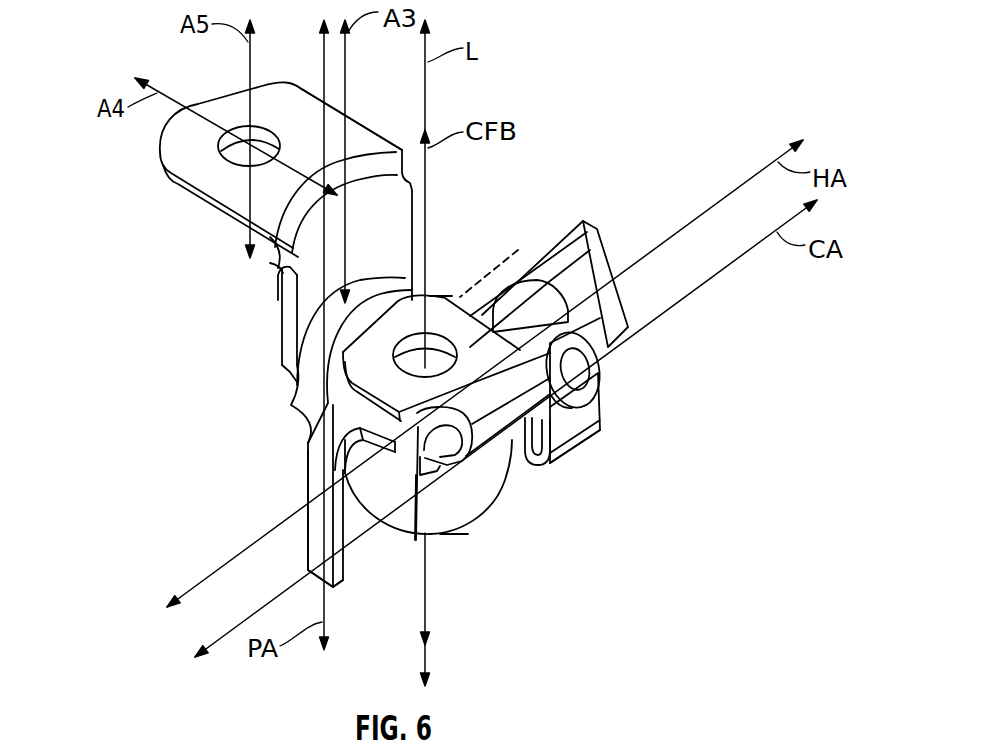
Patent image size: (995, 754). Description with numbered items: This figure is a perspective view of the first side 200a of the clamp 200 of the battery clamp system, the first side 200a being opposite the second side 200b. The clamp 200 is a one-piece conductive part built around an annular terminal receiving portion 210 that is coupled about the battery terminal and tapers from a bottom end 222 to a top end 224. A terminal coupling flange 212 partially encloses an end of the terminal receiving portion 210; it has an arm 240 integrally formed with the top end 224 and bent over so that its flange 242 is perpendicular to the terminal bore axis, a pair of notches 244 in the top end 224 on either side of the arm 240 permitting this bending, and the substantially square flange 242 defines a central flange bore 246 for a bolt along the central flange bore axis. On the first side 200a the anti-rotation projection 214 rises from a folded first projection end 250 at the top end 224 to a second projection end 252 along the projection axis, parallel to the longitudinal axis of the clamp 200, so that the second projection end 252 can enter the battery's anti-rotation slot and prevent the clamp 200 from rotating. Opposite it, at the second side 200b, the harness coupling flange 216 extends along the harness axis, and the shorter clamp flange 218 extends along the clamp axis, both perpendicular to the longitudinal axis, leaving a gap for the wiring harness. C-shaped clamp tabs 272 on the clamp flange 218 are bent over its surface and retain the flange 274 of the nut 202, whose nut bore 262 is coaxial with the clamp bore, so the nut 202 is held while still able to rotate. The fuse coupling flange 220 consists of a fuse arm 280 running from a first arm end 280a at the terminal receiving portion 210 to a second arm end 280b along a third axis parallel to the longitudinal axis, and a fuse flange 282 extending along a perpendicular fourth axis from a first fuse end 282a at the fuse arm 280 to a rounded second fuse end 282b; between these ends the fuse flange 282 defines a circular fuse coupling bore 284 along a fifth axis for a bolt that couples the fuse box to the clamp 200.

The clamp 200 is at (550, 150).
The first side 200a is at (413, 460).
The second side 200b is at (523, 249).
The nut 202 is at (612, 387).
The terminal receiving portion 210 is at (460, 550).
The terminal coupling flange 212 is at (405, 288).
The anti-rotation projection 214 is at (295, 563).
The harness coupling flange 216 is at (620, 281).
The clamp flange 218 is at (582, 452).
The fuse coupling flange 220 is at (278, 83).
The bottom end 222 is at (490, 513).
The top end 224 is at (431, 463).
The arm 240 is at (512, 443).
The flange 242 is at (452, 290).
The notches 244 is at (431, 464).
The central flange bore 246 is at (433, 342).
The first projection end 250 is at (322, 427).
The second projection end 252 is at (343, 588).
The nut bore 262 is at (590, 373).
The clamp tabs 272 is at (540, 298).
The flange of the nut 274 is at (608, 325).
The fuse arm 280 is at (268, 348).
The first arm end 280a is at (277, 370).
The second arm end 280b is at (280, 263).
The fuse flange 282 is at (356, 120).
The first fuse end 282a is at (378, 167).
The second fuse end 282b is at (175, 158).
The fuse coupling bore 284 is at (197, 177).